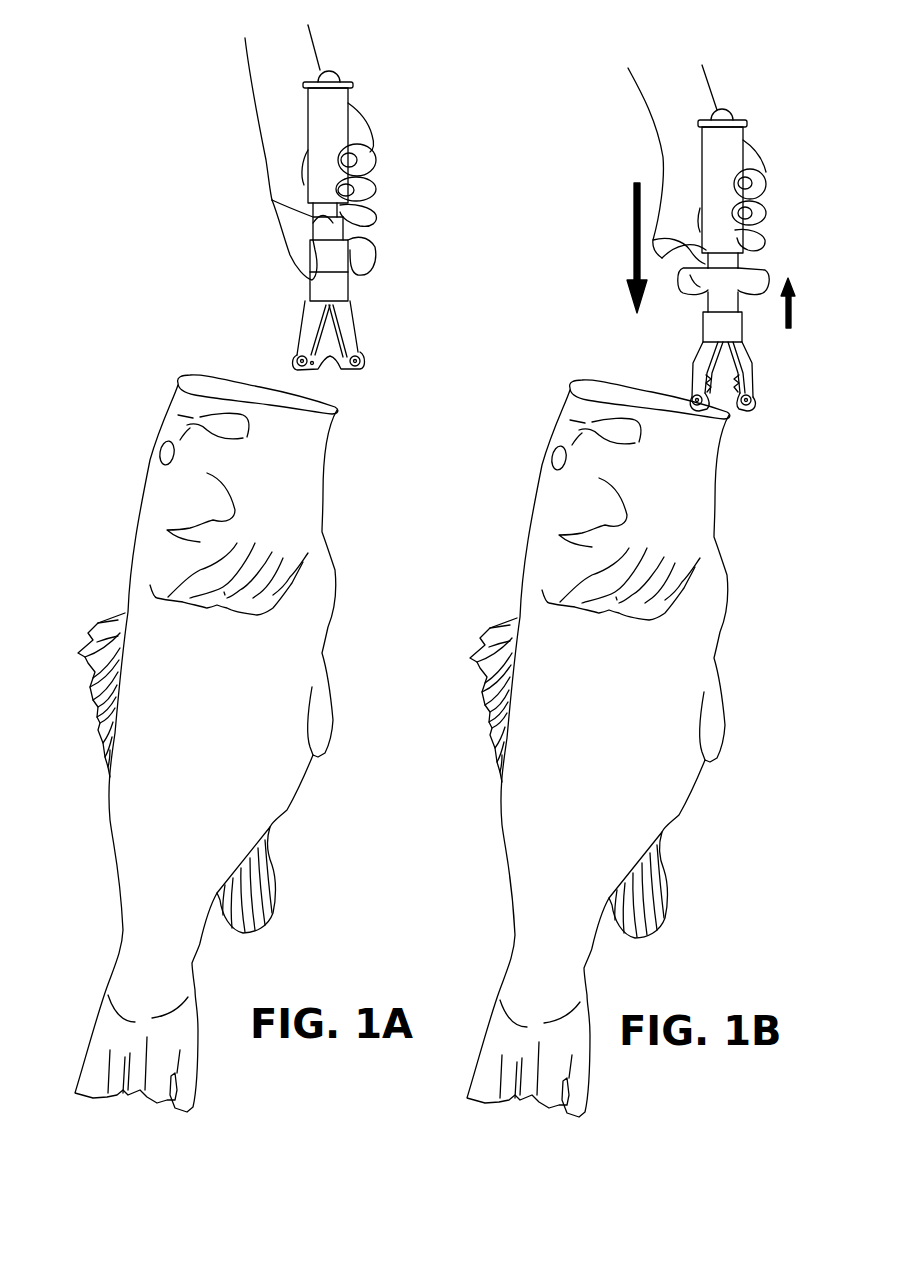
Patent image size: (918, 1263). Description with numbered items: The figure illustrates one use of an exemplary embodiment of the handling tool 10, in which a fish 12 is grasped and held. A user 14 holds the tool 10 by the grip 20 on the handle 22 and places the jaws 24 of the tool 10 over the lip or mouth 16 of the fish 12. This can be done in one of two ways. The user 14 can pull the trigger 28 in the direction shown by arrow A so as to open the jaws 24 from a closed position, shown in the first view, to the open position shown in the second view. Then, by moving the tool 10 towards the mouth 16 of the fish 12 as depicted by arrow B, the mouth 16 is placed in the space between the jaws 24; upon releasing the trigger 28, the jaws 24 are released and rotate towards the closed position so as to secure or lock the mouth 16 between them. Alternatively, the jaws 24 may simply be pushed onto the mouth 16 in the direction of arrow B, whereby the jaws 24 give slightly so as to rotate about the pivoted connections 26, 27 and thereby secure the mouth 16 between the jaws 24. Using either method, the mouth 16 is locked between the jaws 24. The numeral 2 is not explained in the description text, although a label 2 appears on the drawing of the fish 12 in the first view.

In FIG. 1A, the fish 2 is at (221, 743).
In FIG. 1A, the handling tool 10 is at (331, 225).
In FIG. 1B, the handling tool 10 is at (732, 260).
In FIG. 1B, the fish 12 is at (620, 748).
In FIG. 1A, the user 14 is at (277, 58).
In FIG. 1B, the user 14 is at (683, 70).
In FIG. 1A, the lip or mouth 16 is at (320, 417).
In FIG. 1B, the lip or mouth 16 is at (694, 413).
In FIG. 1A, the grip 20 is at (357, 203).
In FIG. 1B, the grip 20 is at (722, 197).
In FIG. 1A, the handle 22 is at (340, 100).
In FIG. 1B, the handle 22 is at (728, 148).
In FIG. 1A, the jaws 24 is at (363, 365).
In FIG. 1A, the pivoted connection 26 is at (366, 348).
In FIG. 1B, the pivoted connection 26 is at (762, 396).
In FIG. 1A, the pivoted connection 27 is at (286, 356).
In FIG. 1B, the pivoted connection 27 is at (684, 388).
In FIG. 1A, the trigger 28 is at (333, 253).
In FIG. 1B, the trigger 28 is at (740, 265).
In FIG. 1B, the arrow A is at (793, 308).
In FIG. 1B, the arrow B is at (633, 243).